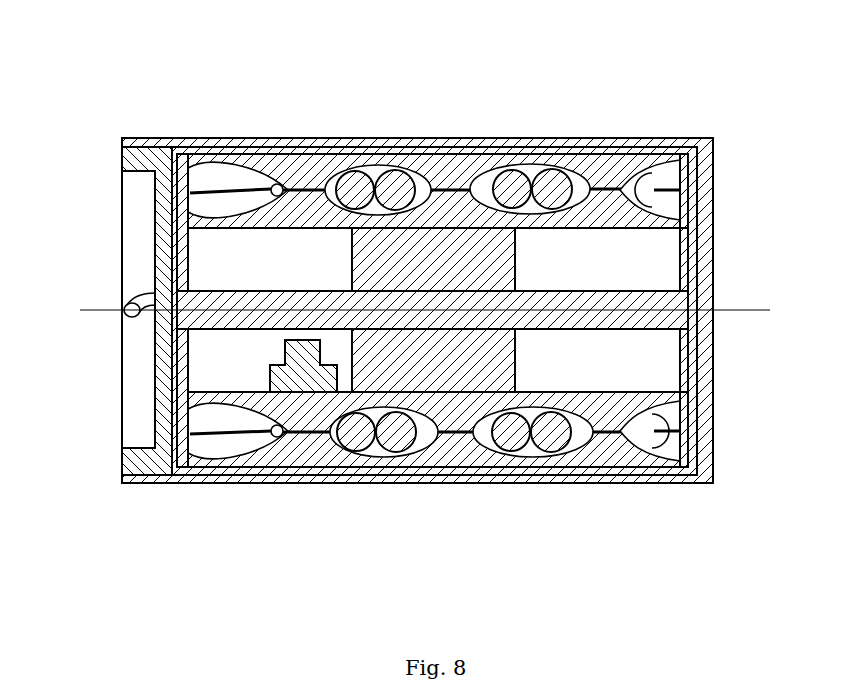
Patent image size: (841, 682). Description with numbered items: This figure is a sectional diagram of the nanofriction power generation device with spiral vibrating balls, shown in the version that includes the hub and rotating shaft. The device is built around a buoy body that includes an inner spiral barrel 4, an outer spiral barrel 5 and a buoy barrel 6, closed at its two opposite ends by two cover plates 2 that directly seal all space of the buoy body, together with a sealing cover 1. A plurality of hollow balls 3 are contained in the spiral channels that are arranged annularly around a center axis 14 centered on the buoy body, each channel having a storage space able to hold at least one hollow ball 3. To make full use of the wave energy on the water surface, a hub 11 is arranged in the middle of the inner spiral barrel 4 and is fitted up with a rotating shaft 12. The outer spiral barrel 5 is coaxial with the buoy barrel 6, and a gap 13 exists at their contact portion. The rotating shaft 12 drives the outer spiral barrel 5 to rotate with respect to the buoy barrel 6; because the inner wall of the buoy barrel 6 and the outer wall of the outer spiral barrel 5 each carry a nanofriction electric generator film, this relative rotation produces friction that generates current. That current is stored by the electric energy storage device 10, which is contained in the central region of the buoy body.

The sealing cover 1 is at (145, 160).
The cover plates 2 is at (184, 138).
The hollow balls 3 is at (385, 185).
The inner spiral barrel 4 is at (610, 210).
The outer spiral barrel 5 is at (450, 165).
The buoy barrel 6 is at (327, 148).
The electric energy storage device 10 is at (292, 375).
The hub 11 is at (385, 357).
The rotating shaft 12 is at (525, 313).
The gap 13 is at (552, 455).
The center axis 14 is at (738, 313).